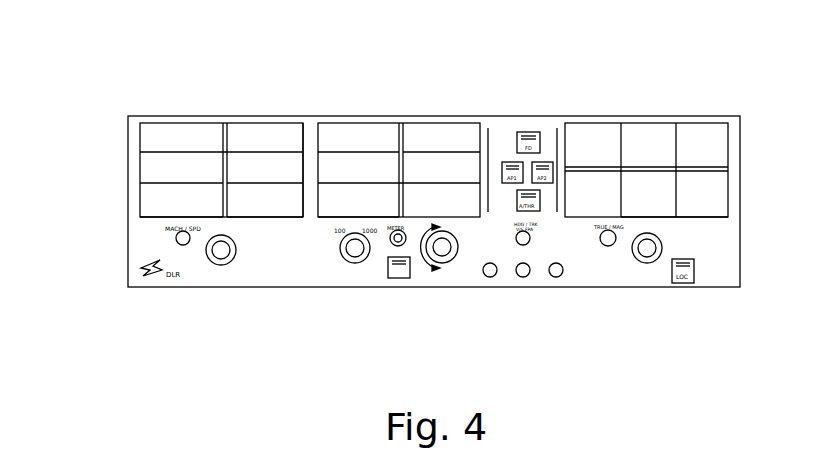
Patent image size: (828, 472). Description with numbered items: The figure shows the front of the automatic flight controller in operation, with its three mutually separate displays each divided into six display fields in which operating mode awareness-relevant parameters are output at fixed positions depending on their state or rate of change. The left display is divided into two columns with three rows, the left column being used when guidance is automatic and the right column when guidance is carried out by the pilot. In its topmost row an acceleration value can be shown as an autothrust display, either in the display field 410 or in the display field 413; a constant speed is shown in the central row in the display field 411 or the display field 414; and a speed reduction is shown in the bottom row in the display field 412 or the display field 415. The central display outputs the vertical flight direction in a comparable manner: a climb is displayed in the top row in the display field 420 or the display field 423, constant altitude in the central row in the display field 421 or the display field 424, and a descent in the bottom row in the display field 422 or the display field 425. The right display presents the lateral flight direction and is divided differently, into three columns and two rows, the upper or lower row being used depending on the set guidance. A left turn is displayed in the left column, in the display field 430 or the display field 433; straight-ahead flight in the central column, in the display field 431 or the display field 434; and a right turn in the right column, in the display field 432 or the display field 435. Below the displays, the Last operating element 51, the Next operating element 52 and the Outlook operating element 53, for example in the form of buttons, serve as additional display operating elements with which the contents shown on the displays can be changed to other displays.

The display field 410 is at (180, 133).
The display field 411 is at (143, 170).
The display field 412 is at (163, 205).
The display field 413 is at (263, 133).
The display field 414 is at (305, 167).
The display field 415 is at (273, 205).
The display field 420 is at (370, 132).
The display field 421 is at (313, 163).
The display field 422 is at (385, 208).
The display field 423 is at (453, 132).
The display field 424 is at (458, 265).
The display field 425 is at (405, 275).
The display field 430 is at (582, 132).
The display field 431 is at (657, 132).
The display field 432 is at (703, 132).
The display field 433 is at (583, 207).
The display field 434 is at (660, 207).
The display field 435 is at (703, 207).
The Last operating element 51 is at (493, 277).
The Next operating element 52 is at (528, 277).
The Outlook operating element 53 is at (560, 278).